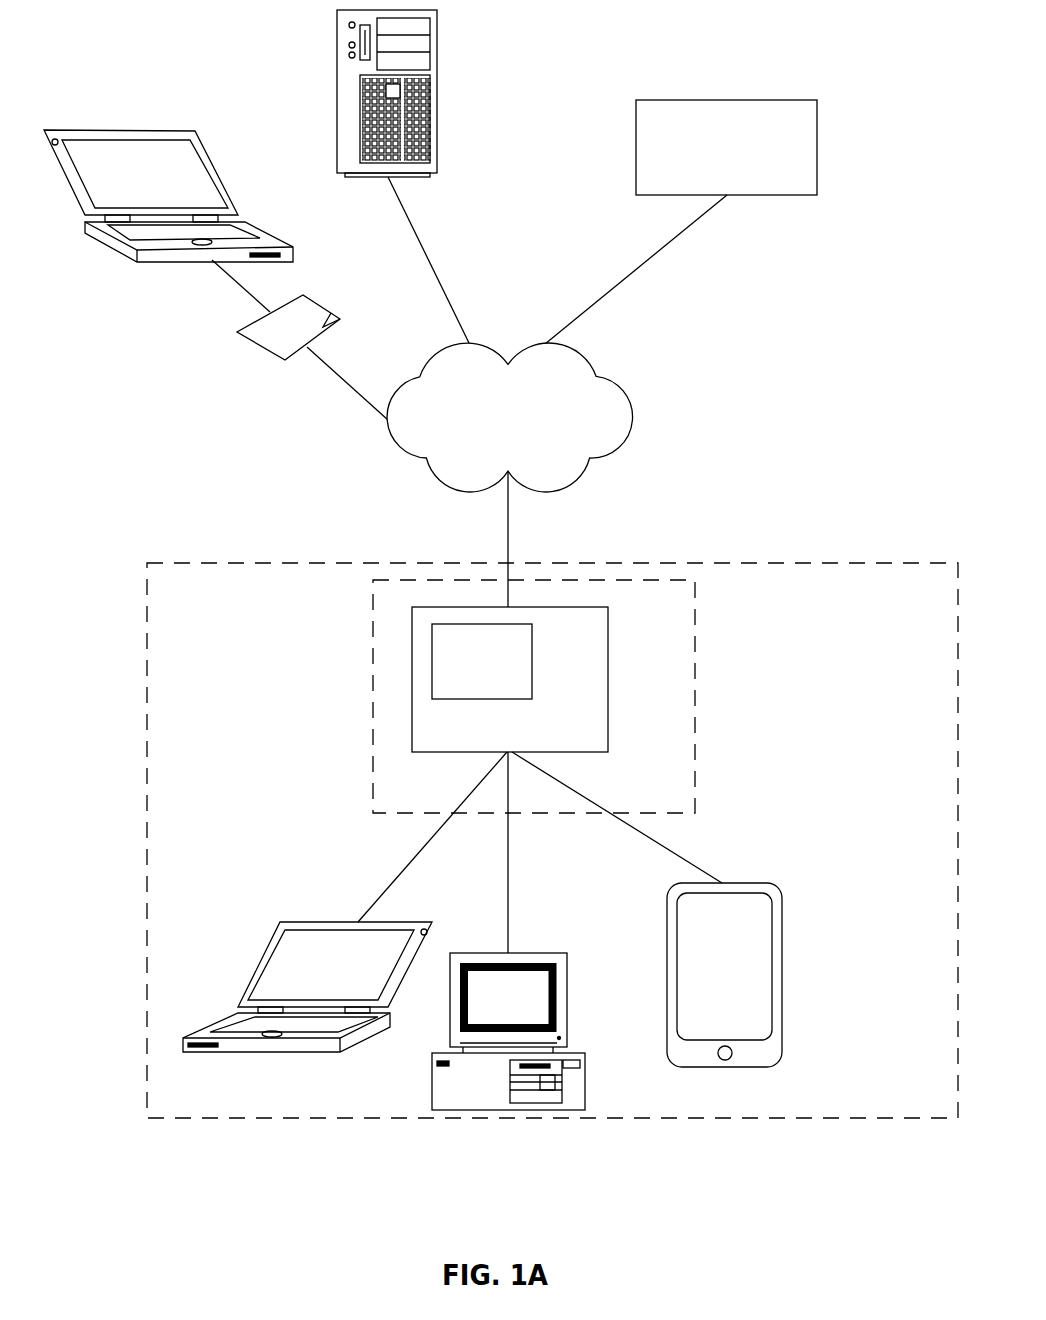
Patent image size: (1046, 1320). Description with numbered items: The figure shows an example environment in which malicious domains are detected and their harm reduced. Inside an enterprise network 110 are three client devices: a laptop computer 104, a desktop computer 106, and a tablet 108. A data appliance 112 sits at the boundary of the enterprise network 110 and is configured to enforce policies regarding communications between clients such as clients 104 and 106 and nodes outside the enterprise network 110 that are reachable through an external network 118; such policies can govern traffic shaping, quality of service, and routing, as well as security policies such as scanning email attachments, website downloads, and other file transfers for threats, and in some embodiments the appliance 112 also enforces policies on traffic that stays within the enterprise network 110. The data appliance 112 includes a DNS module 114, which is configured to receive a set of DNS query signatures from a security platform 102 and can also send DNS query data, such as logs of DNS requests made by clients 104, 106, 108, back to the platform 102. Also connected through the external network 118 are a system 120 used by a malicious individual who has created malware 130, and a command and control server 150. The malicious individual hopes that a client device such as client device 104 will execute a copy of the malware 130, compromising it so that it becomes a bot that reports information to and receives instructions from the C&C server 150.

The security platform 102 is at (817, 145).
The client device (laptop computer) 104 is at (410, 922).
The client device (desktop computer) 106 is at (567, 995).
The client device (tablet) 108 is at (782, 975).
The enterprise network 110 is at (555, 562).
The data appliance 112 is at (546, 679).
The DNS module 114 is at (532, 660).
The external network 118 is at (597, 380).
The system 120 is at (120, 130).
The malware 130 is at (315, 302).
The command and control (C&C) server 150 is at (437, 92).